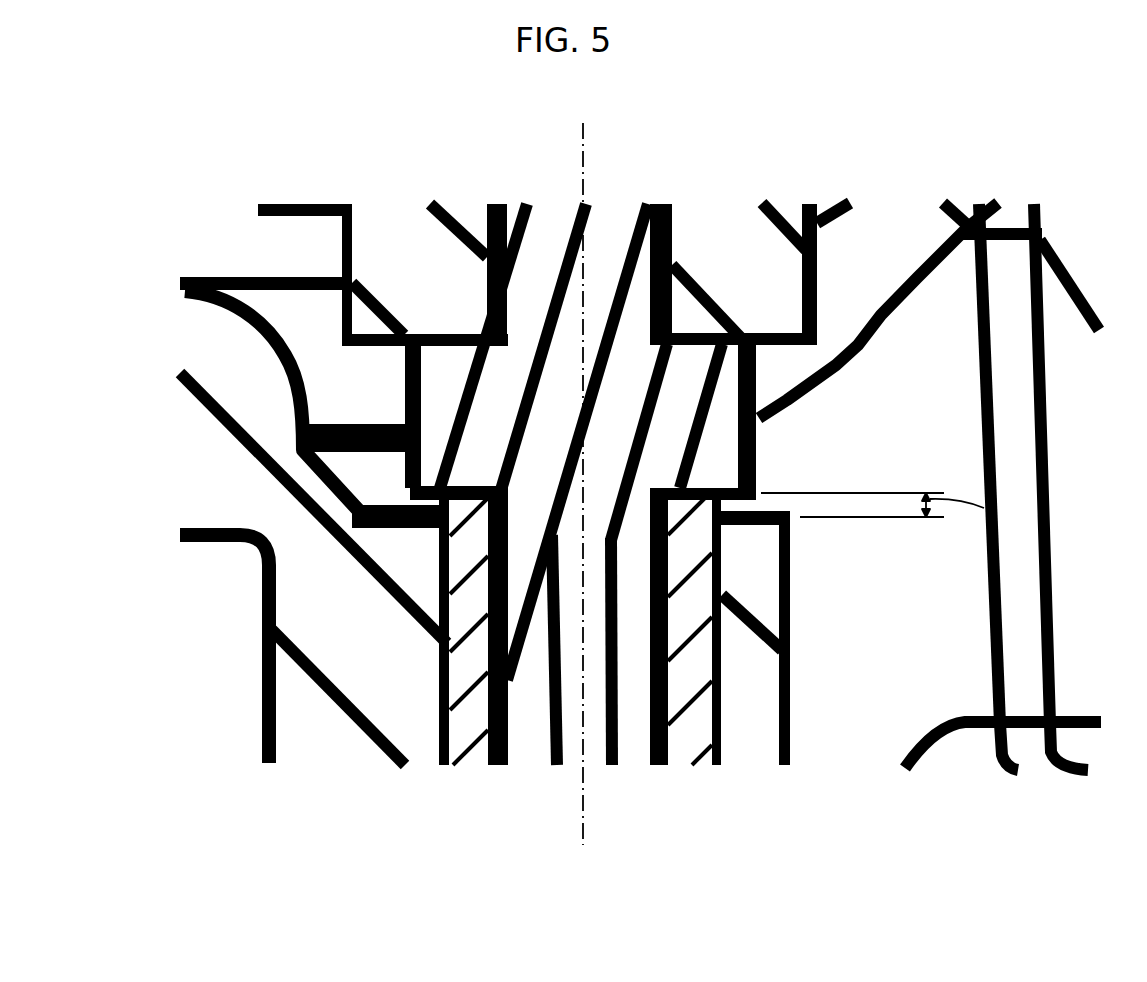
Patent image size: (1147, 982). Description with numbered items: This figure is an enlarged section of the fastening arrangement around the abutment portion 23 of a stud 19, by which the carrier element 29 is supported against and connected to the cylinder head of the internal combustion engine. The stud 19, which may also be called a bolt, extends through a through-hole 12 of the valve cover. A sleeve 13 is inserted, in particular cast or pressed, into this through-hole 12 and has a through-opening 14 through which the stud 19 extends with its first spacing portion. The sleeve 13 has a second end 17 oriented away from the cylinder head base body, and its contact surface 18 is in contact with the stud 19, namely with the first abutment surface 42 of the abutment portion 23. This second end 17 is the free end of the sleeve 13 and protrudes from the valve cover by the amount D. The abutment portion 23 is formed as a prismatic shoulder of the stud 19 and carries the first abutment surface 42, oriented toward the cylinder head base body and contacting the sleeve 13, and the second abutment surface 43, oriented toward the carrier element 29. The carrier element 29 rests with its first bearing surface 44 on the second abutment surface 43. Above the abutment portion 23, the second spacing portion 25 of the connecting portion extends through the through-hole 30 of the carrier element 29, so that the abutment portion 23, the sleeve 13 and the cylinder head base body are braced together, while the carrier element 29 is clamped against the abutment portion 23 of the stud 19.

The through-hole 12 is at (452, 724).
The sleeve 13 is at (680, 737).
The through-opening 14 is at (668, 639).
The second end 17 is at (448, 540).
The contact surface 18 is at (759, 413).
The stud 19 is at (628, 212).
The abutment portion 23 is at (457, 407).
The second spacing portion 25 is at (537, 263).
The carrier element 29 is at (408, 215).
The through-hole 30 is at (515, 204).
The first abutment surface 42 is at (367, 552).
The second abutment surface 43 is at (410, 340).
The first bearing surface 44 is at (745, 392).
The amount D is at (985, 512).